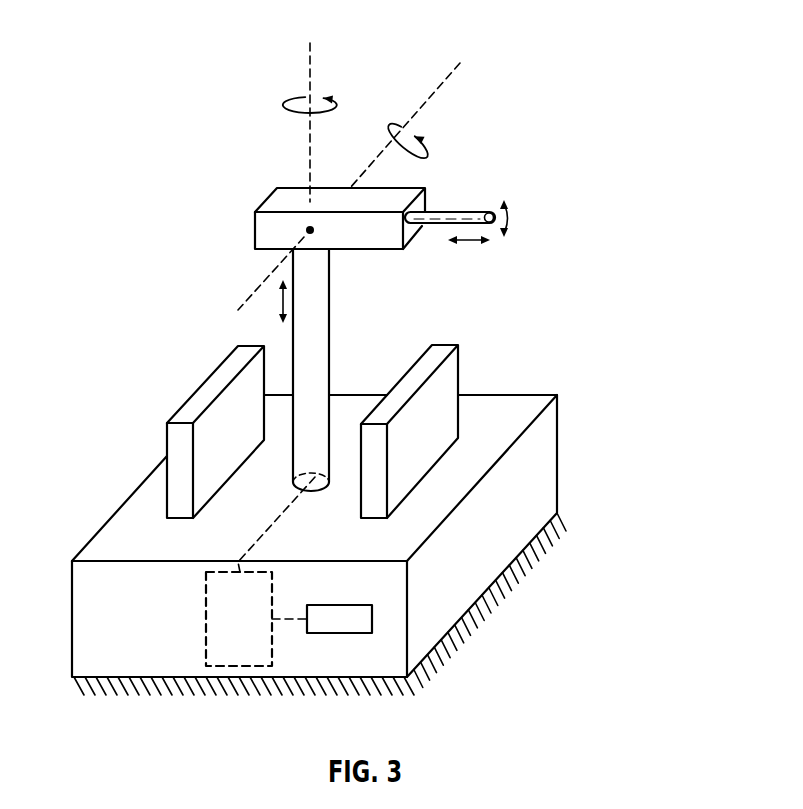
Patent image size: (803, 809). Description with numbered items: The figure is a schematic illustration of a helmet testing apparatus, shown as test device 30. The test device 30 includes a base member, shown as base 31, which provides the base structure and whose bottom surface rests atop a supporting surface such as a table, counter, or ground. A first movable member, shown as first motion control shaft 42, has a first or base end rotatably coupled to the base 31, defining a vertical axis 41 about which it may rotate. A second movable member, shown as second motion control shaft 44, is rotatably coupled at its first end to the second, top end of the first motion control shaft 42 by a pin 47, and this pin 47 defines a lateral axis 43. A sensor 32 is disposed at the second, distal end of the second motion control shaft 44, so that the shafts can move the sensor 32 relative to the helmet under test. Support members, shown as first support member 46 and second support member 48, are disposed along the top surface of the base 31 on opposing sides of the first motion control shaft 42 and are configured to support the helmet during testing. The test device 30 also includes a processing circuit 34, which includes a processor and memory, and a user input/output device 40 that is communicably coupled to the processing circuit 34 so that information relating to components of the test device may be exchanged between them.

The test device 30 is at (592, 32).
The base 31 is at (547, 487).
The sensor 32 is at (455, 212).
The processing circuit 34 is at (206, 628).
The user input/output (I/O) device 40 is at (343, 605).
The vertical axis 41 is at (310, 63).
The first motion control shaft 42 is at (312, 325).
The lateral axis 43 is at (440, 93).
The second motion control shaft 44 is at (325, 200).
The first support member 46 is at (180, 445).
The pin 47 is at (310, 230).
The second support member 48 is at (440, 402).